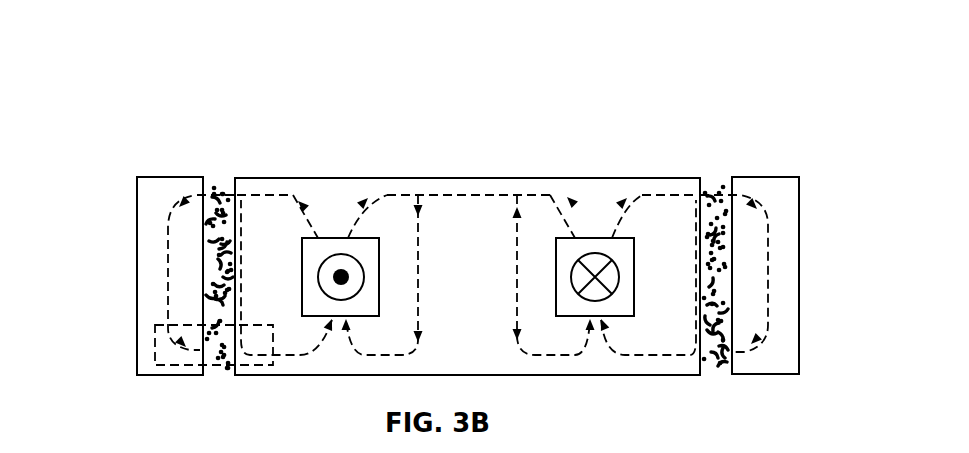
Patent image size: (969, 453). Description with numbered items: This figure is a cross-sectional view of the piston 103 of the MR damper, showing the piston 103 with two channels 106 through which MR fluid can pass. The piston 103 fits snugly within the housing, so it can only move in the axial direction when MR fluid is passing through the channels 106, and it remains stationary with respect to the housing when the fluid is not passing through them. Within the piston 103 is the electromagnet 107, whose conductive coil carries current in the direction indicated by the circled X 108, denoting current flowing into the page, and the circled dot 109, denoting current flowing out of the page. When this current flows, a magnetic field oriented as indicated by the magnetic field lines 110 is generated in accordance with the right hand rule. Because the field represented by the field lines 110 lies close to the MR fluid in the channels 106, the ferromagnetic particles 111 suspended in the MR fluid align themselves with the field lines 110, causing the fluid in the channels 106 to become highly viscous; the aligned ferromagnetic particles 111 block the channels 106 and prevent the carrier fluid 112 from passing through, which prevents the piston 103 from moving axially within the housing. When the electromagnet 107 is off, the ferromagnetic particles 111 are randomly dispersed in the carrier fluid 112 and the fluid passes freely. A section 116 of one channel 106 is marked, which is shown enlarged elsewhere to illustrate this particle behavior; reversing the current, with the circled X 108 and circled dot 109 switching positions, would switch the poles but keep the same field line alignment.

The piston 103 is at (123, 78).
The channels 106 is at (228, 137).
The electromagnet 107 is at (377, 238).
The circled X 108 is at (619, 277).
The circled dot 109 is at (318, 277).
The magnetic field lines 110 is at (387, 195).
The ferromagnetic particles 111 is at (229, 176).
The carrier fluid 112 is at (215, 175).
The section 116 is at (155, 348).